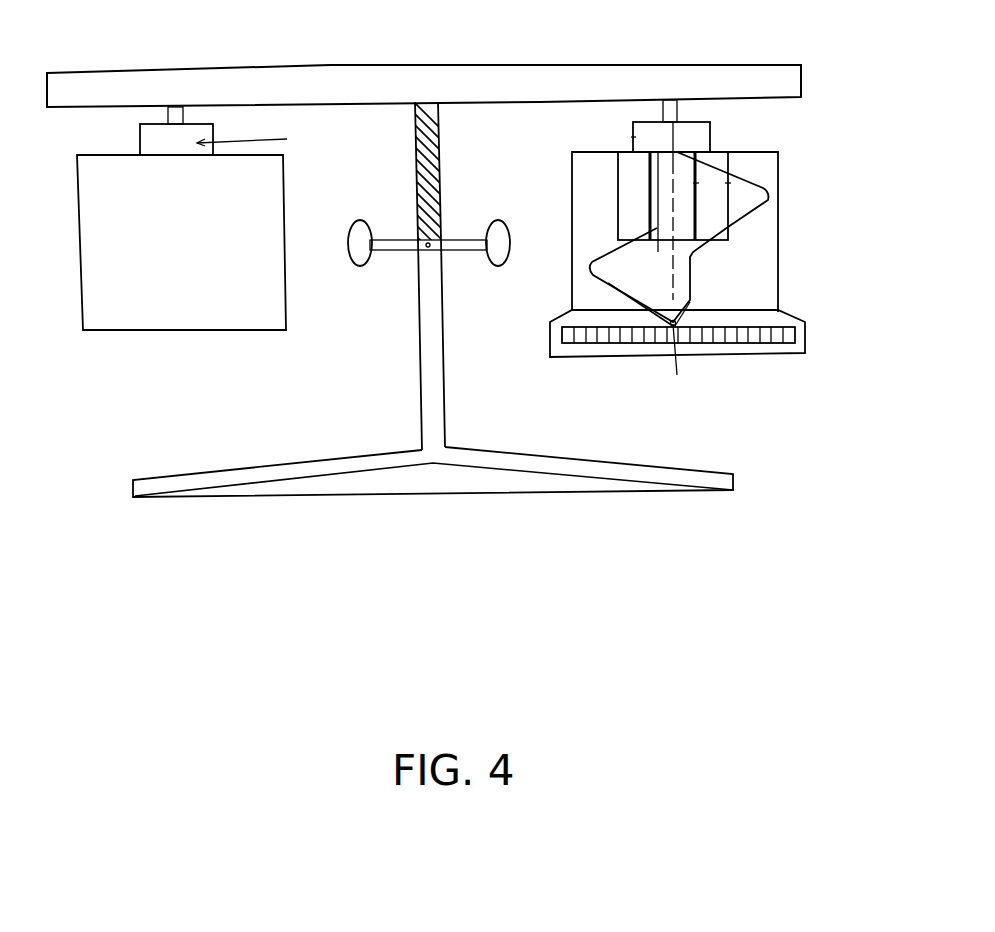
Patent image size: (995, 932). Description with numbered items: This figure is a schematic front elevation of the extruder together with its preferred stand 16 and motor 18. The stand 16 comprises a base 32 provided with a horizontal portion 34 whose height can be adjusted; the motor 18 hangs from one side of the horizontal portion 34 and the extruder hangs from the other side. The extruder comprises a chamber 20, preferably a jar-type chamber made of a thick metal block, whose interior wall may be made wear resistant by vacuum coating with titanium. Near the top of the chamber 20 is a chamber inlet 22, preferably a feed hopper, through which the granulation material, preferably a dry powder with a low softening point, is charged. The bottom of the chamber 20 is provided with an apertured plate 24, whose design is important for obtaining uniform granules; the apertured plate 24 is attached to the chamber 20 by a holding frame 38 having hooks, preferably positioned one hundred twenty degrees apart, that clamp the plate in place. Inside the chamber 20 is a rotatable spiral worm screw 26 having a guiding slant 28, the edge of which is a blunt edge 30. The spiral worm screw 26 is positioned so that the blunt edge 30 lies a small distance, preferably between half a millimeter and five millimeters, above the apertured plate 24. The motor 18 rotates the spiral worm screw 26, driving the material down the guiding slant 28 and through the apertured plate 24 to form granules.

The stand 16 is at (430, 247).
The motor 18 is at (222, 330).
The chamber 20 is at (778, 270).
The chamber inlet 22 is at (618, 177).
The apertured plate 24 is at (733, 338).
The spiral worm screw 26 is at (768, 200).
The guiding slant 28 is at (638, 270).
The blunt edge 30 is at (675, 323).
The base 32 is at (617, 486).
The horizontal portion 34 is at (675, 110).
The holding frame 38 is at (805, 330).